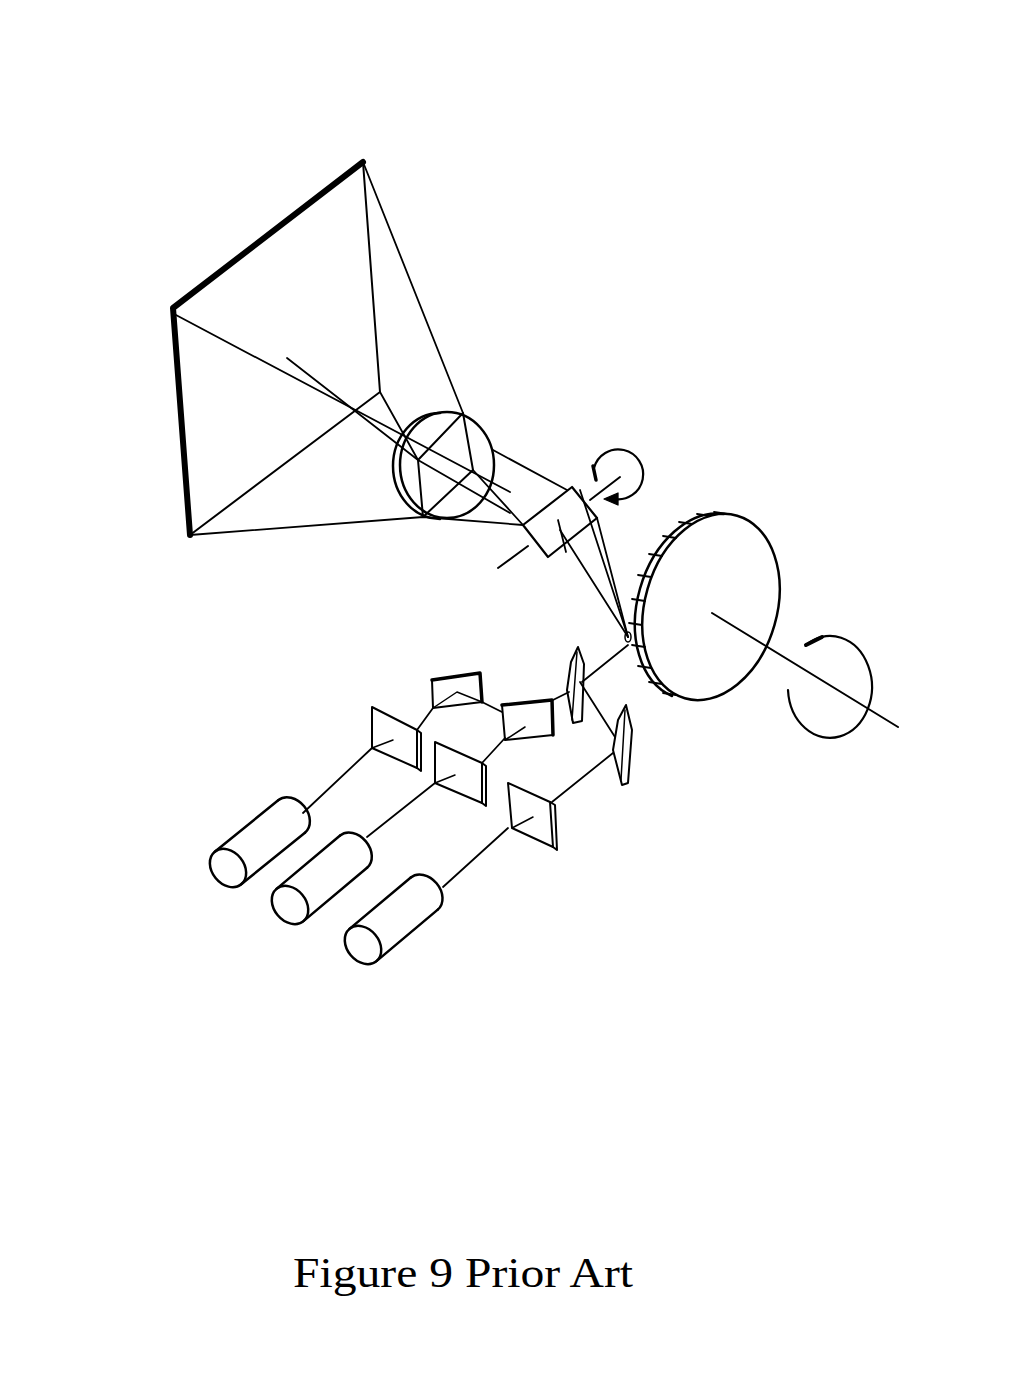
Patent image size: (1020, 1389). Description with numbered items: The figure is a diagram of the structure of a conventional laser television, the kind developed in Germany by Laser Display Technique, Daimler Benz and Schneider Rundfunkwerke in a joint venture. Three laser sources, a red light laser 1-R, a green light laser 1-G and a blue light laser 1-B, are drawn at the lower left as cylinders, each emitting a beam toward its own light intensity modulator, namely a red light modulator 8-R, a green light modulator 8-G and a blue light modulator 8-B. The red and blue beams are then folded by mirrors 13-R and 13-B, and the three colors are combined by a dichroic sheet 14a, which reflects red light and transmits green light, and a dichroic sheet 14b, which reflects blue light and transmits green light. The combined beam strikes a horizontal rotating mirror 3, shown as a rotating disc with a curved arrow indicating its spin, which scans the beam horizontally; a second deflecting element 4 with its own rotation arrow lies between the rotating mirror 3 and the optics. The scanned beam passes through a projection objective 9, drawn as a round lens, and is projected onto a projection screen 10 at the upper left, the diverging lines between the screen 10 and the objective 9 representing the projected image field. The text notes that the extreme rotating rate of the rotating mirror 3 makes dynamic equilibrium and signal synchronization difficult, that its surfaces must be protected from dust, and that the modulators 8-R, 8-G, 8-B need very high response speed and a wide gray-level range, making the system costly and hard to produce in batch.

The projection screen 10 is at (362, 160).
The projection objective 9 is at (465, 413).
The rotating prism 4 is at (582, 488).
The horizontal rotating mirror 3 is at (753, 520).
The dichroic sheet for reflecting red light and transmitting green light 14a is at (540, 725).
The dichroic sheet for reflecting blue and transmitting green light 14b is at (577, 645).
The mirror 13-R is at (442, 682).
The mirror 13-B is at (628, 778).
The red light modulator 8-R is at (378, 737).
The green light modulator 8-G is at (447, 780).
The blue light modulator 8-B is at (513, 822).
The red light laser 1-R is at (233, 870).
The green light laser 1-G is at (288, 905).
The blue light laser 1-B is at (363, 948).